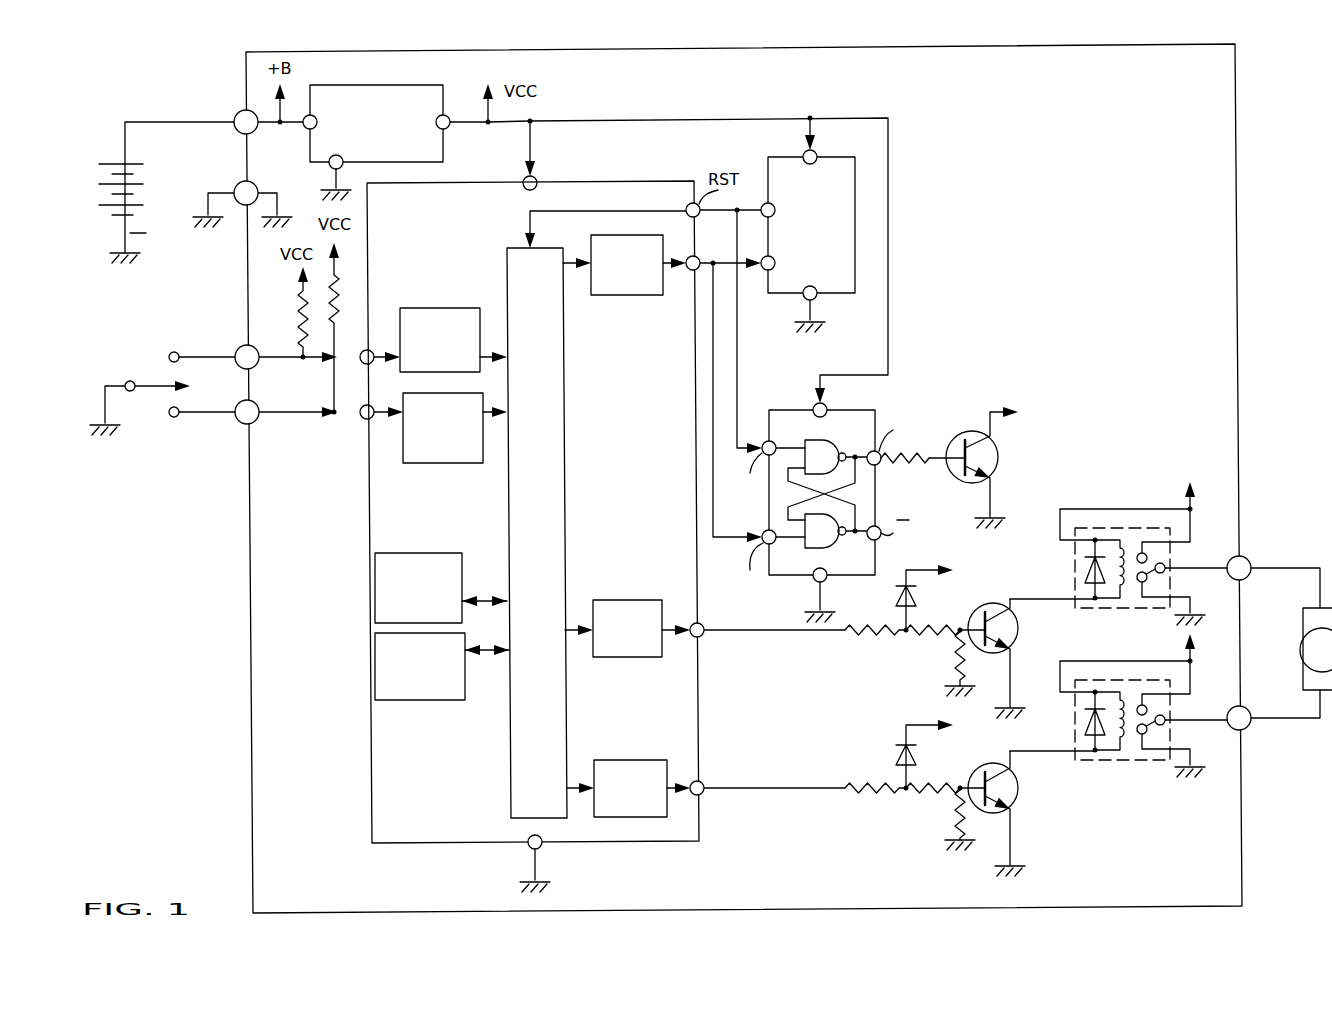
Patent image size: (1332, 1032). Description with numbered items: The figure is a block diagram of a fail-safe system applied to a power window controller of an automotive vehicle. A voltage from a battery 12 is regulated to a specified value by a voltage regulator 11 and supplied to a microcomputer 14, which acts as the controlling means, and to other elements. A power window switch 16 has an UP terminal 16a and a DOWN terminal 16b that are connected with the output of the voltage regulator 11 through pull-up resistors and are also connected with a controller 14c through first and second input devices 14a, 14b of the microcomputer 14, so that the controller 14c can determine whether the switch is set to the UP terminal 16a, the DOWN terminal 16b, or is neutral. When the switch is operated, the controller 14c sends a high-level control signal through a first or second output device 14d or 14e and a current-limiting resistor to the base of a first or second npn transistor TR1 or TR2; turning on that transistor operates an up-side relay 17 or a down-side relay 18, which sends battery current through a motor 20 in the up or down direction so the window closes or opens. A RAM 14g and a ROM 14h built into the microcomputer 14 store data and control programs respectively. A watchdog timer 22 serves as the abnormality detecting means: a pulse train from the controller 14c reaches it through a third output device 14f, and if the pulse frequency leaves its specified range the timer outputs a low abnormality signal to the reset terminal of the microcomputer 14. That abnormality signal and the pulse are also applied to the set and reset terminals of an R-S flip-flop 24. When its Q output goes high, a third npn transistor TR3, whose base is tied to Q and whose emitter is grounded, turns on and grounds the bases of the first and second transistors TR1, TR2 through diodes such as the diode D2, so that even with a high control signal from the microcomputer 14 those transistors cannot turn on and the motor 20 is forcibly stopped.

The voltage regulator 11 is at (443, 147).
The battery 12 is at (148, 200).
The microcomputer 14 is at (372, 762).
The first input device 14a is at (437, 308).
The second input device 14b is at (428, 463).
The controller 14c is at (565, 497).
The first output device 14d is at (615, 658).
The second output device 14e is at (617, 760).
The third output device 14f is at (620, 295).
The RAM 14g is at (438, 553).
The ROM 14h is at (430, 700).
The power window switch 16 is at (126, 382).
The UP terminal 16a is at (175, 352).
The DOWN terminal 16b is at (175, 417).
The up-side relay 17 is at (1119, 526).
The down-side relay 18 is at (1140, 762).
The motor 20 is at (1303, 685).
The watchdog timer 22 is at (857, 198).
The R-S flip-flop 24 is at (787, 408).
The first transistor TR1 is at (1020, 633).
The second transistor TR2 is at (1020, 795).
The third transistor TR3 is at (966, 431).
The diode D2 is at (893, 757).